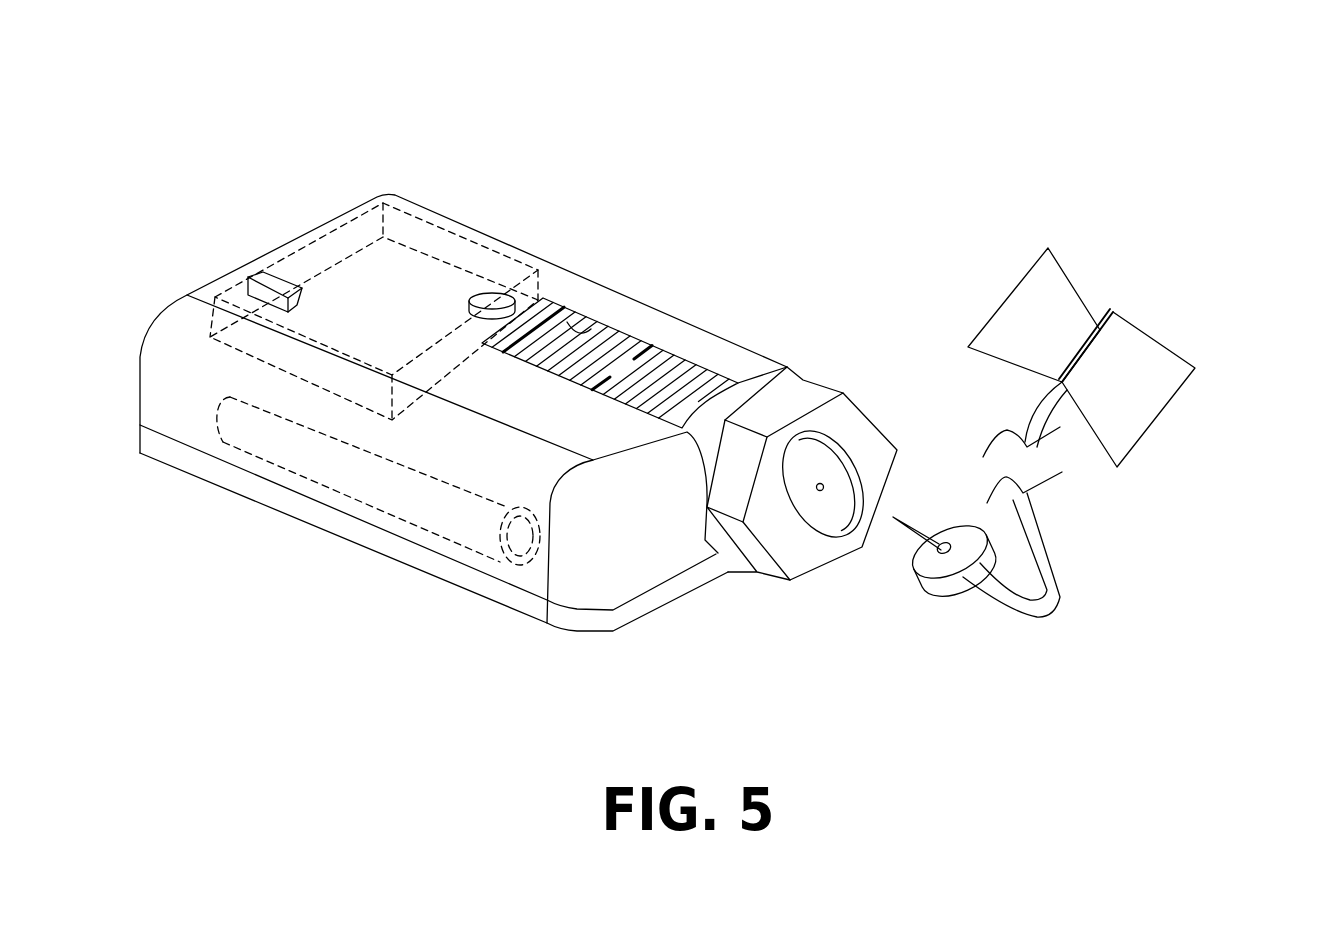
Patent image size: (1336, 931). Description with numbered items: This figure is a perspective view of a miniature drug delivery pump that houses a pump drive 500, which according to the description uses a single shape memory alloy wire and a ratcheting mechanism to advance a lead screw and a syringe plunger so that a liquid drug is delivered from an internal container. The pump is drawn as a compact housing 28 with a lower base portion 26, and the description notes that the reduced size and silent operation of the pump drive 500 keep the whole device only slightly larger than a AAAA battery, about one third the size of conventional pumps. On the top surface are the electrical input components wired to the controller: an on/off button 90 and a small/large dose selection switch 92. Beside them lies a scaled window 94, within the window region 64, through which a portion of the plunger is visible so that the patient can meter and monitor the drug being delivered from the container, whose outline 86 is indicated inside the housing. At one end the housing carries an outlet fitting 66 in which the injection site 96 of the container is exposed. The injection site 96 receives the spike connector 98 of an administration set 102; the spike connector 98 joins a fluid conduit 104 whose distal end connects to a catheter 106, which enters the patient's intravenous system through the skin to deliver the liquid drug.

The pump drive 500 is at (430, 225).
The housing 28 is at (208, 258).
The small/large dose selection switch 92 is at (293, 277).
The on/off button 90 is at (490, 300).
The scale window 64 is at (590, 326).
The scaled window 94 is at (687, 367).
The outlet fitting 66 is at (800, 518).
The injection site 96 is at (820, 491).
The reservoir cartridge 86 is at (400, 518).
The base 26 is at (258, 492).
The spike connector 98 is at (937, 597).
The fluid conduit 104 is at (1063, 577).
The administration set 102 is at (1178, 292).
The catheter 106 is at (1140, 338).